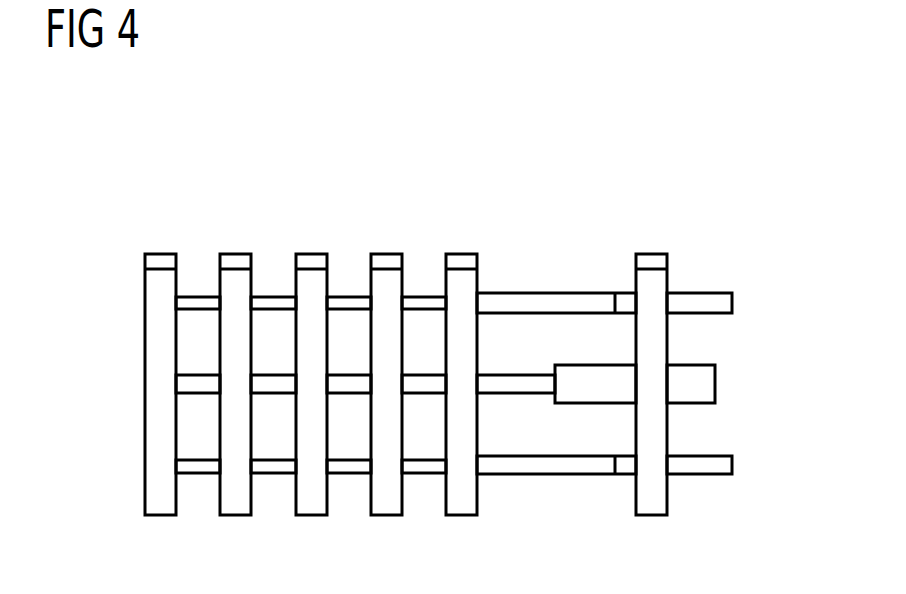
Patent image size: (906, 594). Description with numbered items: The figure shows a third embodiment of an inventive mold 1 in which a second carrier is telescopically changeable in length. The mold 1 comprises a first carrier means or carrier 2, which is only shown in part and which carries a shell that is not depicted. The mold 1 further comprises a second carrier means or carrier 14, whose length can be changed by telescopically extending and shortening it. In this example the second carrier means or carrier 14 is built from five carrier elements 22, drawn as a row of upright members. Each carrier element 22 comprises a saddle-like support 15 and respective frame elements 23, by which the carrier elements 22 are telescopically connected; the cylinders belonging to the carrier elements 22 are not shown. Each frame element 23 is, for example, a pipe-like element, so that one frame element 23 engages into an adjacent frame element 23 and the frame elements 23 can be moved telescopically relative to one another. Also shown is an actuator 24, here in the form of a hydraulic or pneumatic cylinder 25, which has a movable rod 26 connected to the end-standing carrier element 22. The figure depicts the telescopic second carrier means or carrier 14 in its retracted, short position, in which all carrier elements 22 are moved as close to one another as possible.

The mold 1 is at (633, 133).
The first carrier means or carrier 2 is at (715, 285).
The second carrier means or carrier 14 is at (473, 220).
The saddle-like support 15 is at (158, 419).
The carrier element 22 is at (181, 246).
The frame element 23 is at (192, 297).
The actuator 24 is at (703, 367).
The hydraulic or pneumatic cylinder 25 is at (688, 405).
The movable rod 26 is at (512, 395).